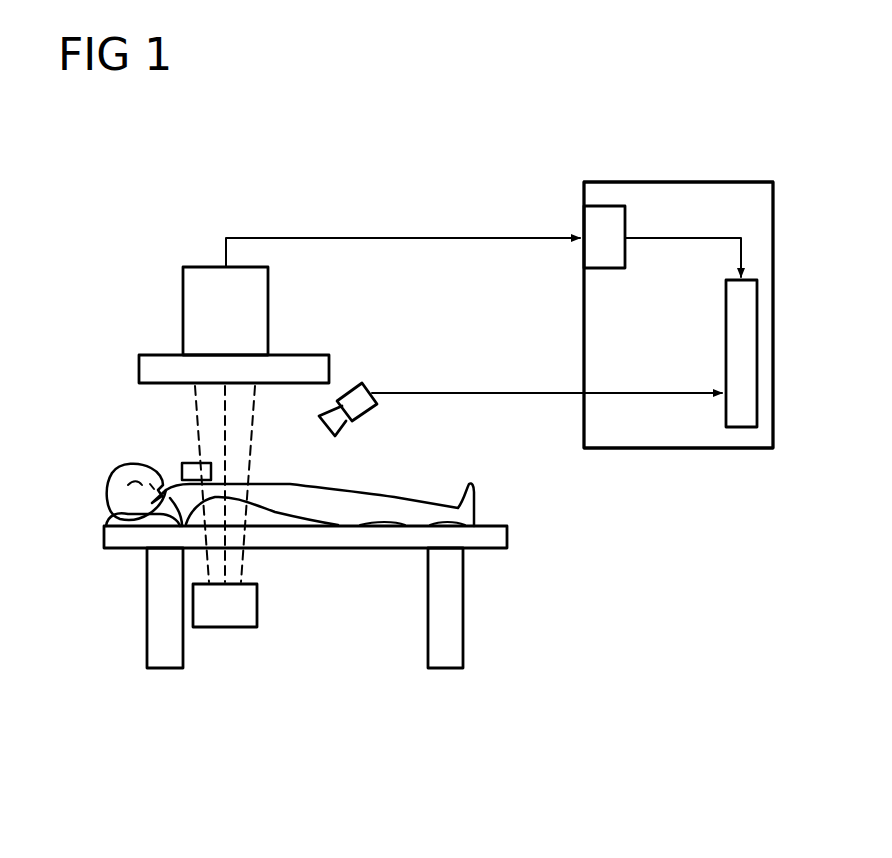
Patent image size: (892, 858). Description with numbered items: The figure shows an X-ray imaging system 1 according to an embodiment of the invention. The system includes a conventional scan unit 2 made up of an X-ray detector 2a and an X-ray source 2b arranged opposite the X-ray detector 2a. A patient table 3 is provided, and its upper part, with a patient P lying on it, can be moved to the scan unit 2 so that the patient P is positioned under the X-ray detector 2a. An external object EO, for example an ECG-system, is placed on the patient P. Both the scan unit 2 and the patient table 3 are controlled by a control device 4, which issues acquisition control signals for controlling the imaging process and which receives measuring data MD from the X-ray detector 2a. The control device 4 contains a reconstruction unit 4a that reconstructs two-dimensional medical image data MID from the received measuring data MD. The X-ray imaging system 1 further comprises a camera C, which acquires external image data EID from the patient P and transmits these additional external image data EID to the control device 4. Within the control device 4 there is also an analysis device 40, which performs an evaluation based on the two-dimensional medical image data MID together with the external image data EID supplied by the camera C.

The X-ray imaging system 1 is at (750, 127).
The scan unit 2 is at (183, 311).
The X-ray detector 2a is at (139, 370).
The X-ray source 2b is at (257, 606).
The patient table 3 is at (507, 537).
The control device 4 is at (684, 181).
The reconstruction unit 4a is at (602, 270).
The analysis device 40 is at (726, 362).
The patient P is at (110, 495).
The external object EO is at (182, 470).
The camera C is at (368, 415).
The measuring data MD is at (401, 237).
The external image data EID is at (478, 392).
The medical image data MID is at (681, 241).